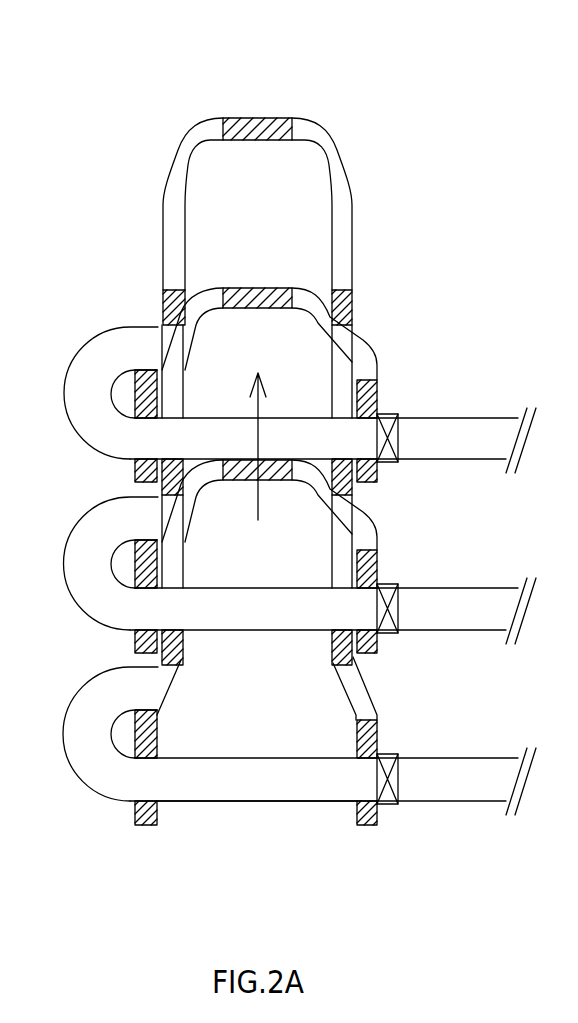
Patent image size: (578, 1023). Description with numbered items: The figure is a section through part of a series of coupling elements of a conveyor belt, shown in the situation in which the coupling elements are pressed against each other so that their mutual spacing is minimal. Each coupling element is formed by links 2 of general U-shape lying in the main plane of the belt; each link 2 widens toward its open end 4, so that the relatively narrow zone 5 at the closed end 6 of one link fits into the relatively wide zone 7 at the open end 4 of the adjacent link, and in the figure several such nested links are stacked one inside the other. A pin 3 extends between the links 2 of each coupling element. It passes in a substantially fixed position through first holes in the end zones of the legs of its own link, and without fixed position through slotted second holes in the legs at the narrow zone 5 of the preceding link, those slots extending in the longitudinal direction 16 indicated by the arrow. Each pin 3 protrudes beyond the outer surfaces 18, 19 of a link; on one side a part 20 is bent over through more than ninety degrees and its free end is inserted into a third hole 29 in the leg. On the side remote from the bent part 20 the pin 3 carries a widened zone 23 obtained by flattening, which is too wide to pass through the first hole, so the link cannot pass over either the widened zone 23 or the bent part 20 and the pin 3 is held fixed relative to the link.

The link 2 is at (372, 300).
The pin 3 is at (483, 430).
The open end 4 is at (265, 817).
The relatively narrow zone 5 is at (273, 202).
The closed end 6 is at (255, 130).
The relatively wide zone 7 is at (242, 737).
The longitudinal direction 16 is at (268, 407).
The outer surface 18 is at (137, 830).
The outer surface 19 is at (375, 815).
The bent part 20 is at (97, 415).
The widened zone 23 is at (387, 755).
The third hole 29 is at (152, 717).